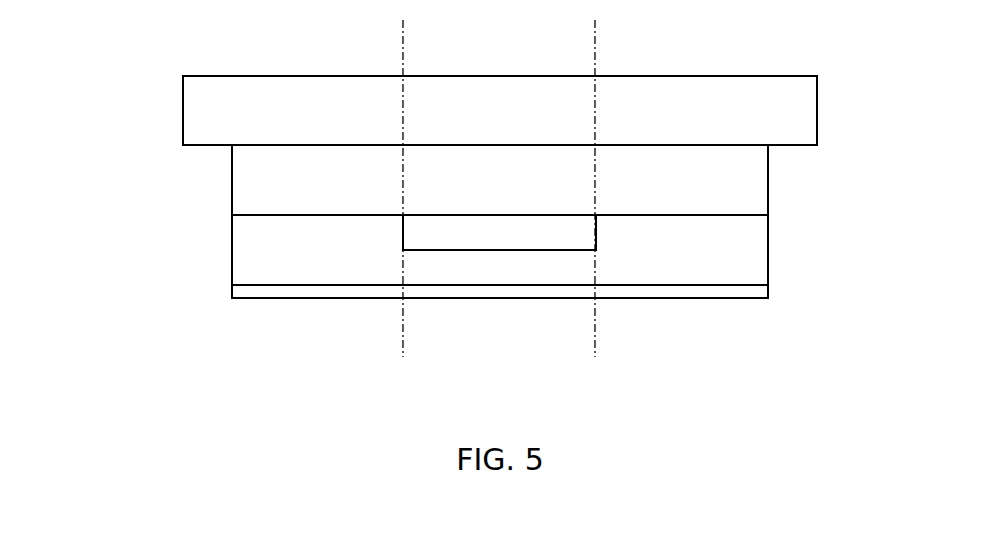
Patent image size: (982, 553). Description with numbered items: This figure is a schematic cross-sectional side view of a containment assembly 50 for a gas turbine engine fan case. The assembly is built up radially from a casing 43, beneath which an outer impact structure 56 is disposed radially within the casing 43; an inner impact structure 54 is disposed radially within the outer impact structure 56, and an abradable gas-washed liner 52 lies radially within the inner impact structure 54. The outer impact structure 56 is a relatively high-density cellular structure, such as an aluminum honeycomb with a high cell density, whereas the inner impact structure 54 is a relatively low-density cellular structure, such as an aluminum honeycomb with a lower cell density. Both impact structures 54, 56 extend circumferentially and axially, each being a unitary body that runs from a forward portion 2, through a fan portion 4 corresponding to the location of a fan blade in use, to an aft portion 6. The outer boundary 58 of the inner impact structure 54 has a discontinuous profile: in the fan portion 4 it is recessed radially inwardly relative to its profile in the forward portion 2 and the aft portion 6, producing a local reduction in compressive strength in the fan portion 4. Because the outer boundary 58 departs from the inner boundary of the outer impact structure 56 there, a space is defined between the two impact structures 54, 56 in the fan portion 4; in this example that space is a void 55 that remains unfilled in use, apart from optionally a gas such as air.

The forward portion 2 is at (297, 58).
The fan portion 4 is at (455, 59).
The aft portion 6 is at (668, 59).
The casing 43 is at (810, 110).
The containment assembly 50 is at (140, 194).
The abradable gas-washed liner 52 is at (710, 295).
The inner impact structure 54 is at (760, 250).
The void 55 is at (516, 235).
The outer impact structure 56 is at (758, 172).
The outer boundary 58 is at (359, 215).